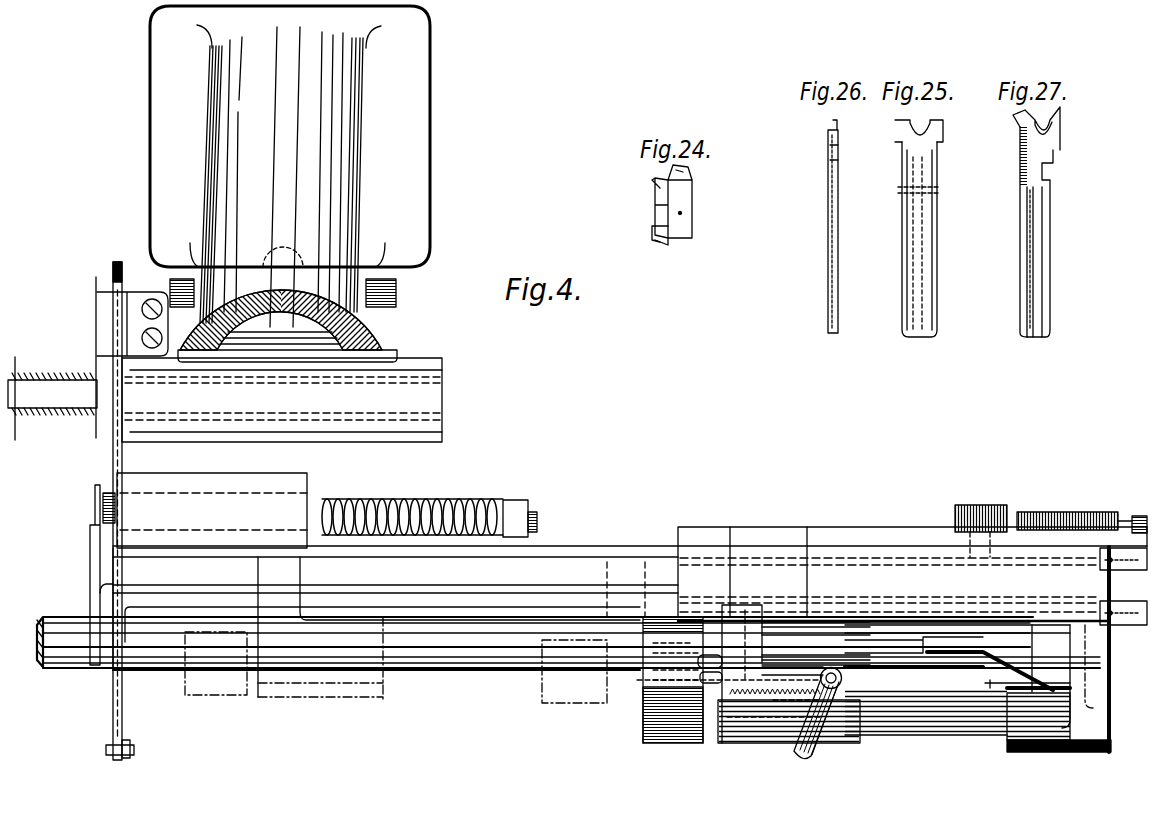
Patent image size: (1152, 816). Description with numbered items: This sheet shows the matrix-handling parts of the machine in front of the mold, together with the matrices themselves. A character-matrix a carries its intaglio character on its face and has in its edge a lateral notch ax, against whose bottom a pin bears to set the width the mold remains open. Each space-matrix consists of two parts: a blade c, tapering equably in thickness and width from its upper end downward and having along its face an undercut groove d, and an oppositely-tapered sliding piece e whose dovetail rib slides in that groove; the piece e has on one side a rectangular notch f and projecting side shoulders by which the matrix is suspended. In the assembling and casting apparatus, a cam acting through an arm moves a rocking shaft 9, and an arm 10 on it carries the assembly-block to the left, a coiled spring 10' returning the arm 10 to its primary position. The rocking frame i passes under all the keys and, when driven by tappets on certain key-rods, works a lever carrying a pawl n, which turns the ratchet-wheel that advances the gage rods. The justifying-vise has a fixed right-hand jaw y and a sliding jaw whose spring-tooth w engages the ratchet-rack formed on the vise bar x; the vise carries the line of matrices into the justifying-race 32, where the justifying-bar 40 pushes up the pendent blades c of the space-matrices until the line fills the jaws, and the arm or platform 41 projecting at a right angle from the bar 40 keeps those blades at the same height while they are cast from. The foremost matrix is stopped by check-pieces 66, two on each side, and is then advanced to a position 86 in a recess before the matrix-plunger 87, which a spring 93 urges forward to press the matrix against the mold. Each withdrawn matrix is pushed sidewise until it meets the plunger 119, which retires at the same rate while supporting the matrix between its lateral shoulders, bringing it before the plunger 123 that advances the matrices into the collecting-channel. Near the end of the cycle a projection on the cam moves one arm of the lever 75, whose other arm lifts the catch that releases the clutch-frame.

In FIG. 4, the plunger 119 is at (121, 290).
In FIG. 4, the plunger 123 is at (52, 394).
In FIG. 4, the lever 75 is at (387, 433).
In FIG. 4, the matrix-plunger 87 is at (316, 504).
In FIG. 4, the arm or continuing platform 41 is at (101, 505).
In FIG. 4, the position 86 is at (103, 513).
In FIG. 4, the check-pieces 66 is at (107, 553).
In FIG. 4, the spring 93 is at (473, 503).
In FIG. 4, the justifying-race 32 is at (568, 547).
In FIG. 4, the justifying-bar 40 is at (568, 630).
In FIG. 4, the rocking shaft 9 is at (907, 547).
In FIG. 4, the arm 10 is at (986, 521).
In FIG. 4, the coiled spring 10' is at (1082, 502).
In FIG. 4, the rocking frame i is at (1140, 603).
In FIG. 4, the right-hand jaw y is at (978, 688).
In FIG. 4, the spring-tooth w is at (758, 682).
In FIG. 4, the pawl n is at (789, 721).
In FIG. 4, the bar x is at (838, 713).
In FIG. 24, the character-matrix a is at (688, 206).
In FIG. 24, the lateral notch ax is at (673, 240).
In FIG. 26, the blade c is at (832, 260).
In FIG. 25, the blade c is at (928, 257).
In FIG. 27, the blade c is at (1023, 255).
In FIG. 27, the undercut groove d is at (1042, 300).
In FIG. 26, the sliding piece e is at (830, 187).
In FIG. 25, the sliding piece e is at (910, 158).
In FIG. 27, the sliding piece e is at (1050, 142).
In FIG. 26, the rectangular notch f is at (832, 170).
In FIG. 25, the rectangular notch f is at (908, 177).
In FIG. 27, the rectangular notch f is at (1047, 160).